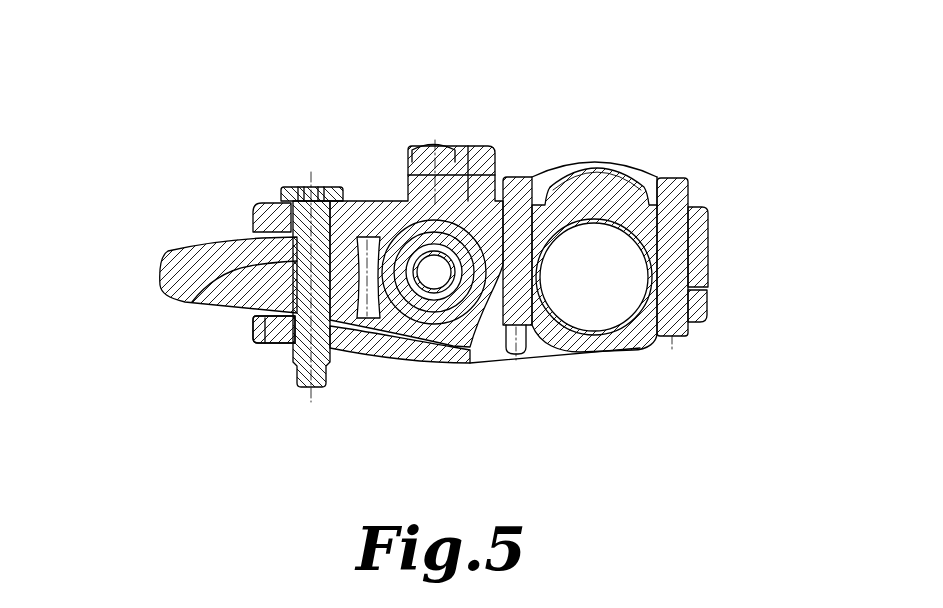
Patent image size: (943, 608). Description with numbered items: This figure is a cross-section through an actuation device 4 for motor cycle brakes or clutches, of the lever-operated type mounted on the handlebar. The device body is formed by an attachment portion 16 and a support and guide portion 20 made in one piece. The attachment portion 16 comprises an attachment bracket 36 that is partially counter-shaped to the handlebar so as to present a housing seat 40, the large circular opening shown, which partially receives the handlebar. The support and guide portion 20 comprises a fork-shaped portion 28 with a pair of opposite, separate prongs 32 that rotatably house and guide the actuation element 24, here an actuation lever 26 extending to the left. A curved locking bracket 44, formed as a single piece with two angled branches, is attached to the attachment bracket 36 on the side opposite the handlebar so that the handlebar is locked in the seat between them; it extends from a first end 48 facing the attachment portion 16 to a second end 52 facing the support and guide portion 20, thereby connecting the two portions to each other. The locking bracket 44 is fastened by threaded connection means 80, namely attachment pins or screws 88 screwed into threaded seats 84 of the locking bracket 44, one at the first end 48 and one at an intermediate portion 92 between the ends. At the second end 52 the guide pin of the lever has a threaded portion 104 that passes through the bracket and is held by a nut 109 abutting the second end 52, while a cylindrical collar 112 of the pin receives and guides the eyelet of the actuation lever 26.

The actuation device 4 is at (274, 140).
The attachment portion 16 is at (638, 212).
The attachment bracket 36 is at (638, 212).
The support and guide portion 20 is at (406, 190).
The fork-shaped portion 28 is at (363, 190).
The actuation element 24 is at (168, 234).
The actuation lever 26 is at (168, 234).
The prongs 32 is at (267, 218).
The housing seat 40 is at (628, 174).
The locking bracket 44 is at (445, 370).
The first end 48 is at (695, 337).
The second end 52 is at (263, 352).
The threaded connection means 80 is at (478, 165).
The attachment pins or screws 88 is at (514, 175).
The threaded seats 84 is at (705, 308).
The intermediate portion 92 is at (518, 364).
The threaded portion 104 is at (352, 319).
The nut 109 is at (320, 388).
The cylindrical collar 112 is at (177, 257).